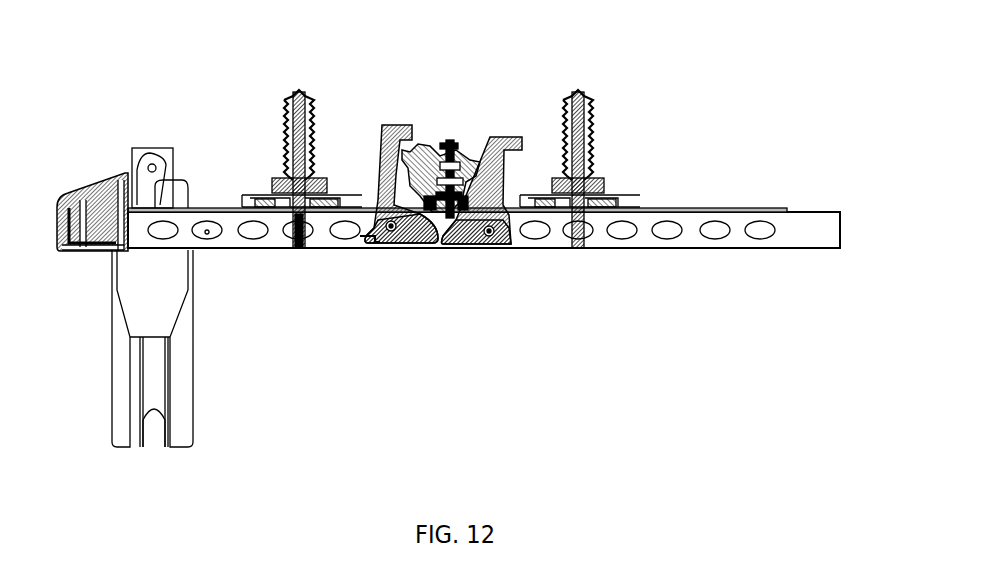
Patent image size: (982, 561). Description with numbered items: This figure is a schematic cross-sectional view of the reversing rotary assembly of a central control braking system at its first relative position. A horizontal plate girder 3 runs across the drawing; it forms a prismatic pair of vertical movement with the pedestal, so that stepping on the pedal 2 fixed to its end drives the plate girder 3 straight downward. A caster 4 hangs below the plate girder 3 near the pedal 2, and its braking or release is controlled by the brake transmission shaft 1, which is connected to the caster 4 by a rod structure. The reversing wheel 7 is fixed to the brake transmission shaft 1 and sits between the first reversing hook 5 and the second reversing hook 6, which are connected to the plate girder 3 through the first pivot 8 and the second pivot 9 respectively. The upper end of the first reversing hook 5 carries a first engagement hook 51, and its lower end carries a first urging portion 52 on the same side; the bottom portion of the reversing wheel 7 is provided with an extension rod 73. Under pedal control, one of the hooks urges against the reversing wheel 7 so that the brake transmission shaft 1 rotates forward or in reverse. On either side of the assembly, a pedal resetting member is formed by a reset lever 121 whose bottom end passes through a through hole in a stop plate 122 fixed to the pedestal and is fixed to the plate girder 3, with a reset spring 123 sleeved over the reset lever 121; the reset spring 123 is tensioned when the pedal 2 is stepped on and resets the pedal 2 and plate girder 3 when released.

The brake transmission shaft 1 is at (463, 145).
The pedal 2 is at (104, 192).
The plate girder 3 is at (646, 240).
The caster 4 is at (190, 372).
The first reversing hook 5 is at (389, 214).
The second reversing hook 6 is at (515, 211).
The reversing wheel 7 is at (478, 145).
The first pivot 8 is at (390, 243).
The second pivot 9 is at (487, 243).
The first engagement hook 51 is at (400, 130).
The first urging portion 52 is at (425, 243).
The extension rod 73 is at (437, 243).
The reset lever 121 is at (296, 245).
The stop plate 122 is at (337, 195).
The reset spring 123 is at (288, 125).